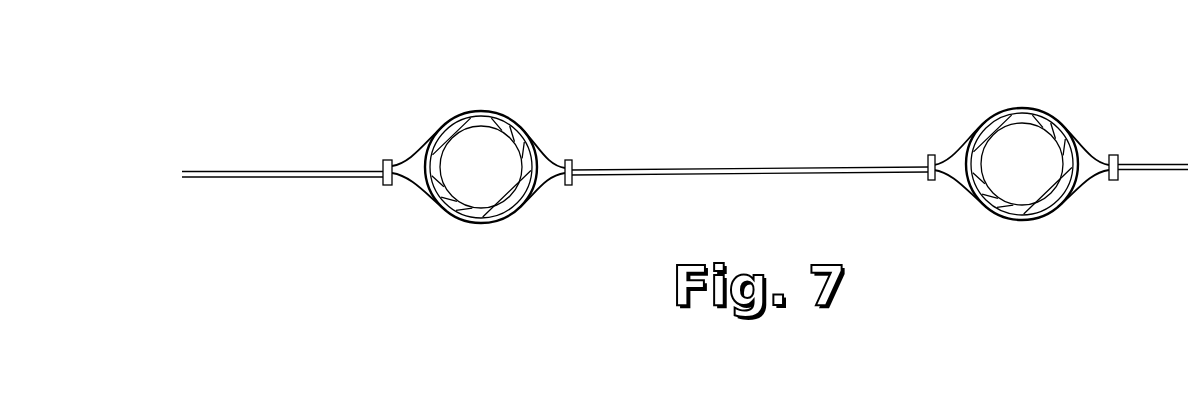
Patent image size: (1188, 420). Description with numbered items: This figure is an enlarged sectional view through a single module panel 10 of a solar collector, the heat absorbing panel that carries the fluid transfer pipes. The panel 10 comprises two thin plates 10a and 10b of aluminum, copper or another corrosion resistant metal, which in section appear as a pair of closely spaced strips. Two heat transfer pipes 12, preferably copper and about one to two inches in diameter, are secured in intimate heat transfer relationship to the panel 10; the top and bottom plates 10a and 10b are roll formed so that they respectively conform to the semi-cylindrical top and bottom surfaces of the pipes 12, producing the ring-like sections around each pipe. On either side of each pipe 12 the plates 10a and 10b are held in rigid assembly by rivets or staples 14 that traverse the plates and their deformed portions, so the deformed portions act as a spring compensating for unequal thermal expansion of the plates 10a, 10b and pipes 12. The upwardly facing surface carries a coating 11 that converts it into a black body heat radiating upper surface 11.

The single module panel 10 is at (778, 134).
The top metal plate 10a is at (321, 170).
The bottom metal plate 10b is at (244, 179).
The black body heat radiating upper surface 11 is at (213, 172).
The heat transfer pipe 12 is at (533, 160).
The rivets or staples 14 is at (393, 161).